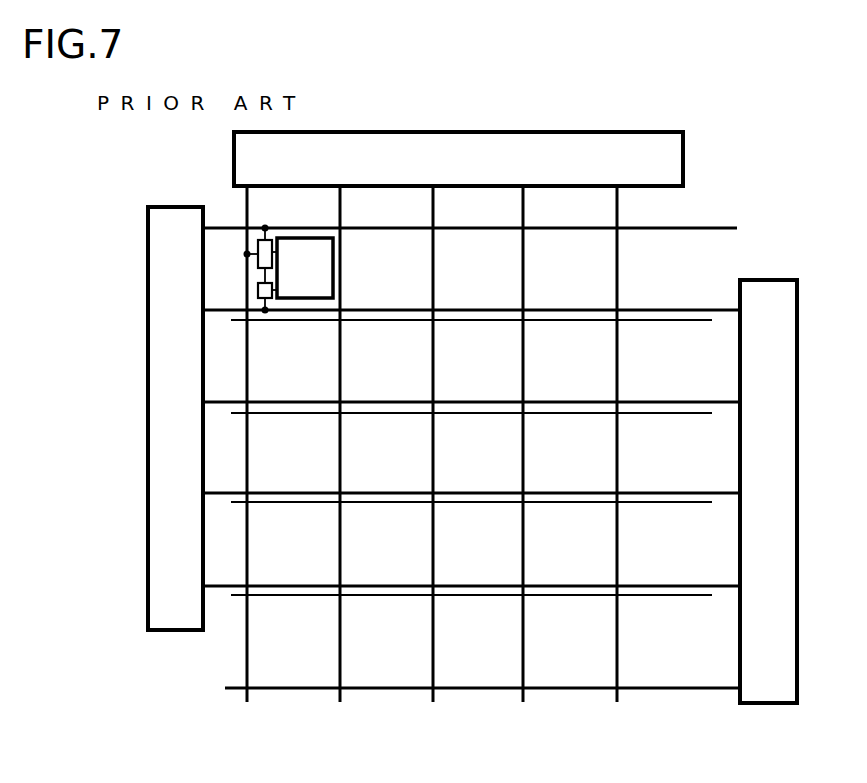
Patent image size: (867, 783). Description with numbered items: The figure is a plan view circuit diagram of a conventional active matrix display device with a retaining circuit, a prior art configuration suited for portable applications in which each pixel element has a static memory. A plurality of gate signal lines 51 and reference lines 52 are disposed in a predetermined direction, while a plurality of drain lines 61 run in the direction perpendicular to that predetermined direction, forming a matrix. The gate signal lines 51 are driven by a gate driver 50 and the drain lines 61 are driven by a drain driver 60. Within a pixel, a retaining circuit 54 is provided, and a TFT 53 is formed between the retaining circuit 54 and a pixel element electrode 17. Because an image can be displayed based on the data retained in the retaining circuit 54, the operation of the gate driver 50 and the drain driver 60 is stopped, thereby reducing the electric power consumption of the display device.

The pixel element electrode 17 is at (336, 270).
The gate driver 50 is at (149, 545).
The gate signal line 51 is at (223, 308).
The reference line 52 is at (673, 412).
The TFT 53 is at (266, 312).
The retaining circuit 54 is at (270, 239).
The drain driver 60 is at (583, 132).
The drain line 61 is at (342, 662).